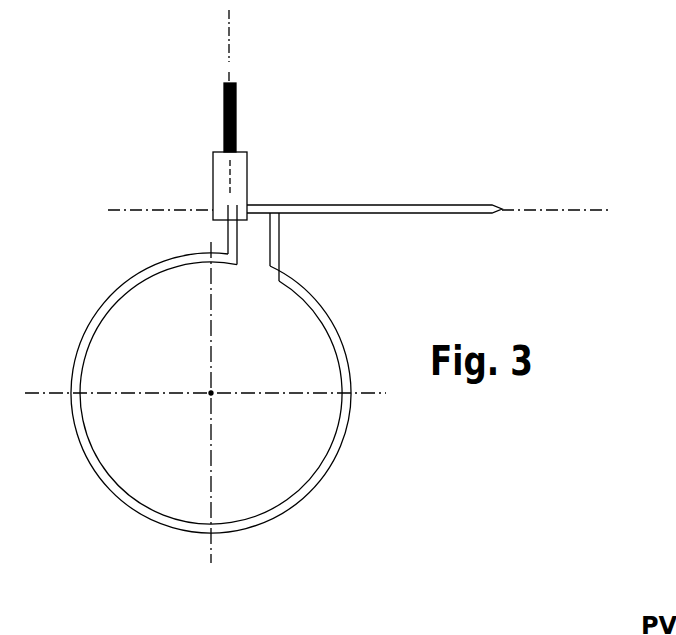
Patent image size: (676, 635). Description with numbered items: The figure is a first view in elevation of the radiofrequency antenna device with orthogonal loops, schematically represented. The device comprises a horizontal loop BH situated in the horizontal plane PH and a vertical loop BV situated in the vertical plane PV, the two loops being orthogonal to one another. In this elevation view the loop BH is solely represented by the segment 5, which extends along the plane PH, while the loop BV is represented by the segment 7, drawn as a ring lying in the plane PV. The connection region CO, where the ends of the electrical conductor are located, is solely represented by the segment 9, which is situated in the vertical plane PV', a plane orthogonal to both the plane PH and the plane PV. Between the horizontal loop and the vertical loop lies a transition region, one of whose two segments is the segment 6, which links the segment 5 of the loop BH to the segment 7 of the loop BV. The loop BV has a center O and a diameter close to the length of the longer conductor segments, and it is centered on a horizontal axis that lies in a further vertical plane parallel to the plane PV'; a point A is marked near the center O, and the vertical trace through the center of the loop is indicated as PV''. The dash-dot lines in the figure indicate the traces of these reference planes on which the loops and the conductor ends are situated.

The segment 5 is at (445, 201).
The segment 6 is at (227, 234).
The segment 7 is at (334, 466).
The segment 9 is at (238, 124).
The ring centre point A is at (212, 392).
The center O is at (224, 408).
The loop BH is at (335, 196).
The loop BV is at (356, 349).
The horizontal plane PH is at (363, 194).
The vertical plane PV is at (228, 429).
The vertical plane PV' is at (270, 45).
The vertical axis through ring centre PV'' is at (173, 415).